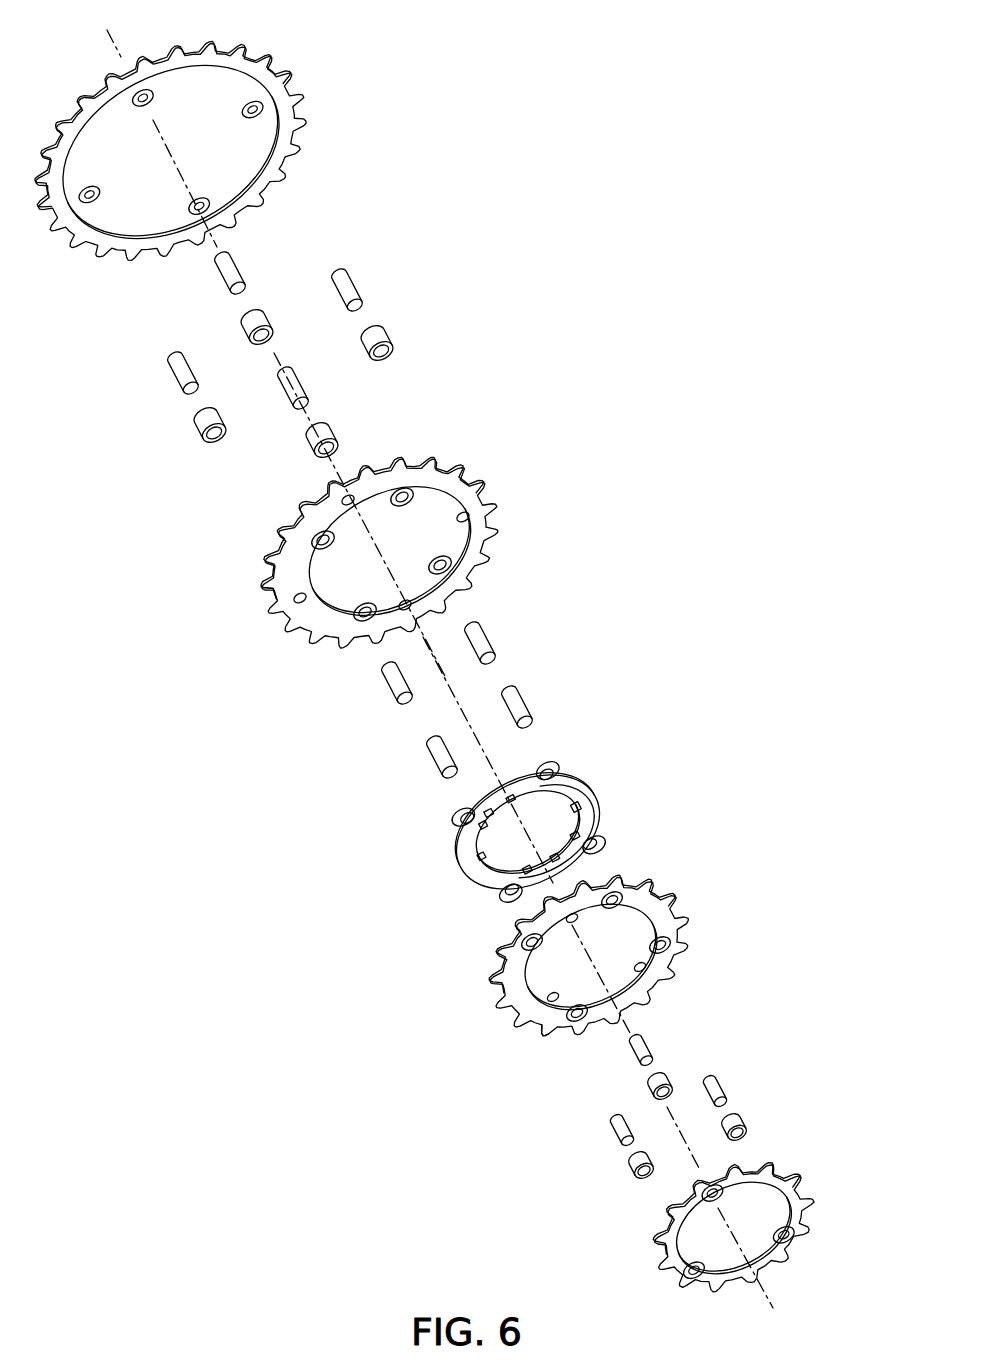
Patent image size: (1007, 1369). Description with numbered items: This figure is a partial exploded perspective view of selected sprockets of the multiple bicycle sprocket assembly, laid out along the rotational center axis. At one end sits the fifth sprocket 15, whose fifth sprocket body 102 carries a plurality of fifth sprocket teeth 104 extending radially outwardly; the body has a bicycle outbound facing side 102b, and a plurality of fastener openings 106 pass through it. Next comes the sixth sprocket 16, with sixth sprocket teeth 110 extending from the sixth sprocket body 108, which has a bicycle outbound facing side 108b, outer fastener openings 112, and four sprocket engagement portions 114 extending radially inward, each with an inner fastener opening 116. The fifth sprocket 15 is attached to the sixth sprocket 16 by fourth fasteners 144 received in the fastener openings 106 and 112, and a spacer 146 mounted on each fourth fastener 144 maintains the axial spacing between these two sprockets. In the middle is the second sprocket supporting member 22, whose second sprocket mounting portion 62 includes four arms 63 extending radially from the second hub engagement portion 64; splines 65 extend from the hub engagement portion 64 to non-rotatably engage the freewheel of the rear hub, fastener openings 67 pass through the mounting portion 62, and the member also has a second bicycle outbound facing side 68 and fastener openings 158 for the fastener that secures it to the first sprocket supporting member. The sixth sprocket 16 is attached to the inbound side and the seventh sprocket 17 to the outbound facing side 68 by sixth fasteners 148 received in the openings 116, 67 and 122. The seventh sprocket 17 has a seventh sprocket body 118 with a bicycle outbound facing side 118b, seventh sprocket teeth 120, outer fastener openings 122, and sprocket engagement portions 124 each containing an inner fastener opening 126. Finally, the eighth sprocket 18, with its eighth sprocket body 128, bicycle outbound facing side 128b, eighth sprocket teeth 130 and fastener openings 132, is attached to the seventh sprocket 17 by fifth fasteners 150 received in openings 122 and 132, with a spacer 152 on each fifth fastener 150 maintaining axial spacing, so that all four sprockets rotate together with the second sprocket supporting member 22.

The fifth sprocket 15 is at (297, 88).
The fifth sprocket body 102 is at (285, 130).
The fifth sprocket teeth 104 is at (290, 148).
The bicycle outbound facing side 102b is at (265, 184).
The fastener openings 106 is at (117, 202).
The fourth fastener 144 is at (355, 283).
The spacer 146 is at (392, 338).
The sixth sprocket 16 is at (490, 497).
The sixth sprocket teeth 110 is at (430, 470).
The sixth sprocket body 108 is at (477, 538).
The bicycle outbound facing side 108b is at (463, 567).
The outer fastener openings 112 is at (301, 603).
The sprocket engagement portions 114 is at (270, 567).
The inner fastener opening 116 is at (332, 542).
The sixth fastener 148 is at (528, 697).
The second sprocket supporting member 22 is at (593, 800).
The arms 63 is at (562, 780).
The spline 65 is at (565, 785).
The second sprocket mounting portion 62 is at (463, 828).
The second hub engagement portion 64 is at (480, 850).
The fastener openings 67 is at (593, 848).
The second bicycle outbound facing side 68 is at (470, 802).
The fastener openings 158 is at (498, 883).
The seventh sprocket 17 is at (665, 893).
The seventh sprocket body 118 is at (663, 928).
The bicycle outbound facing side 118b is at (650, 978).
The seventh sprocket teeth 120 is at (492, 987).
The outer fastener openings 122 is at (547, 1016).
The sprocket engagement portions 124 is at (550, 995).
The inner fastener opening 126 is at (522, 1023).
The fifth fastener 150 is at (615, 1135).
The spacer 152 is at (742, 1120).
The eighth sprocket 18 is at (805, 1181).
The eighth sprocket body 128 is at (763, 1165).
The bicycle outbound facing side 128b is at (665, 1225).
The eighth sprocket teeth 130 is at (690, 1277).
The fastener openings 132 is at (702, 1280).